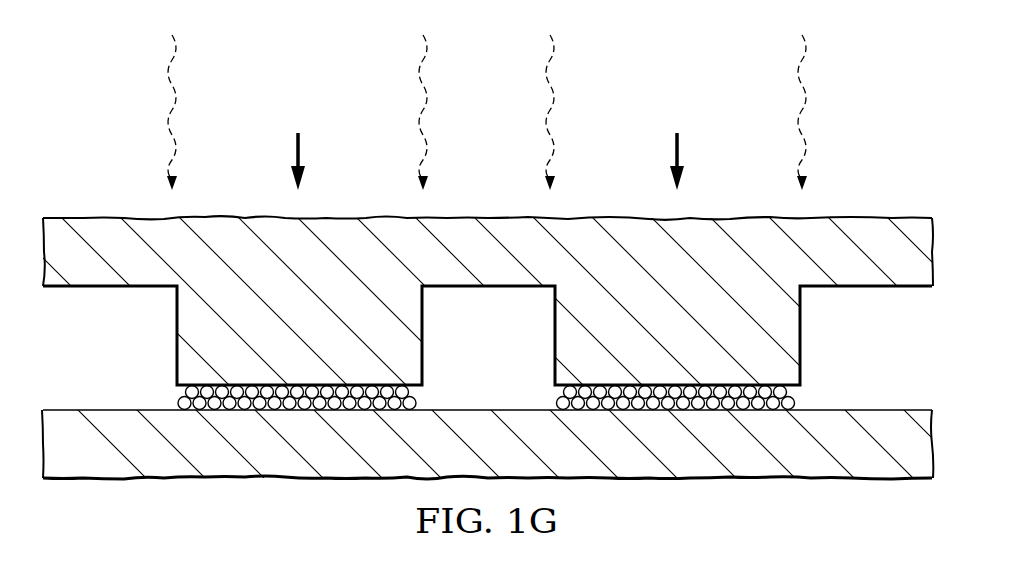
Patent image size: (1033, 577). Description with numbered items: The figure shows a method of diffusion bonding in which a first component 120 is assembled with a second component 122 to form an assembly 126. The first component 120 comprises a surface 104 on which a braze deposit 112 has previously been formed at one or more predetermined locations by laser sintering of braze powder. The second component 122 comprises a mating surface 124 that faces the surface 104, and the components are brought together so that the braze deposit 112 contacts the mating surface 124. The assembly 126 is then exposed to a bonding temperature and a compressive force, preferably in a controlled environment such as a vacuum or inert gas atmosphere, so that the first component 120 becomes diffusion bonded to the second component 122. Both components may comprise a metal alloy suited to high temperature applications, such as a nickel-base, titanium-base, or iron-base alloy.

The assembly 126 is at (130, 132).
The second component 122 is at (221, 218).
The mating surface 124 is at (183, 390).
The braze deposit 112 is at (436, 390).
The surface 104 is at (66, 410).
The first component 120 is at (230, 473).